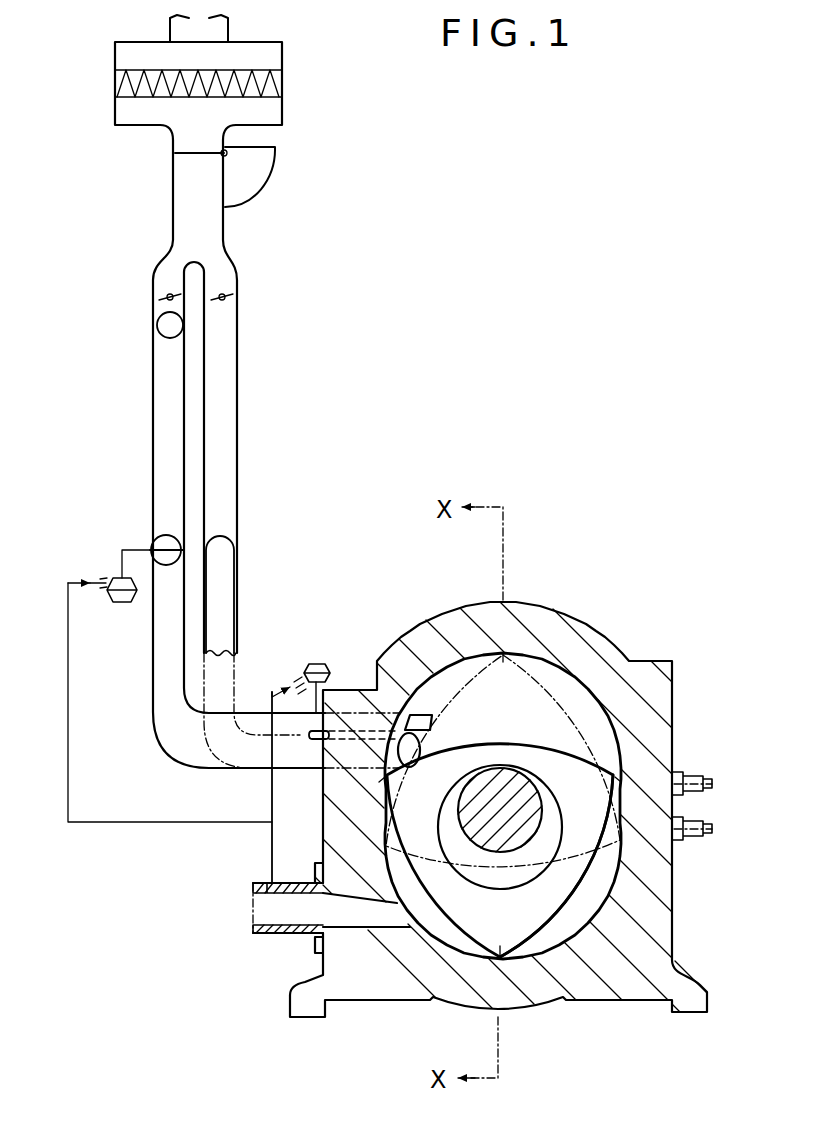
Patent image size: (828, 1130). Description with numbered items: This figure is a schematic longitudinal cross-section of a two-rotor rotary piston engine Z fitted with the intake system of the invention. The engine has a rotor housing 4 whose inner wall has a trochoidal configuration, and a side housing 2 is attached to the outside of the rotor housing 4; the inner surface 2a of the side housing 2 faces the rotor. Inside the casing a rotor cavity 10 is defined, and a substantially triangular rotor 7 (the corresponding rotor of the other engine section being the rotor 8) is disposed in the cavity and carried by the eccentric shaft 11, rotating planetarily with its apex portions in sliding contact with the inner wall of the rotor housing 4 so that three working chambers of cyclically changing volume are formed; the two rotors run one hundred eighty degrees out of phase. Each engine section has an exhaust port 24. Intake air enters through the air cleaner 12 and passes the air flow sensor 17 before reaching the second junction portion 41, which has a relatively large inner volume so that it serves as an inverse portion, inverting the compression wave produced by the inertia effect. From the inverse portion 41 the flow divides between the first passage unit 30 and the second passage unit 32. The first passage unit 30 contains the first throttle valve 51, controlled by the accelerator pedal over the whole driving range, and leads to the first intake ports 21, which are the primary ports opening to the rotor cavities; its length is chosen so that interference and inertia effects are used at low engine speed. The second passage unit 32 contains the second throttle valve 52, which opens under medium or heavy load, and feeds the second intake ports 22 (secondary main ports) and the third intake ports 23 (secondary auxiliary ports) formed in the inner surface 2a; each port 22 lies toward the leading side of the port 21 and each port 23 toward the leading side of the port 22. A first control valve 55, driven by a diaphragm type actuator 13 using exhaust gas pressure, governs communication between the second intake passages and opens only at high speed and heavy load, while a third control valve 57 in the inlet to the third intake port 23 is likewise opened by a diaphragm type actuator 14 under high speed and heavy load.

The air cleaner 12 is at (270, 107).
The air flow sensor 17 is at (276, 160).
The second junction portion 41 is at (198, 232).
The second passage unit 32 is at (150, 368).
The first passage unit 30 is at (242, 368).
The second throttle valve 52 is at (165, 296).
The first throttle valve 51 is at (227, 296).
The first control valve 55 is at (155, 547).
The diaphragm type actuator 13 is at (117, 604).
The diaphragm type actuators 14 is at (317, 663).
The third control valve 57 is at (310, 733).
The second intake ports 22 is at (384, 690).
The third intake ports 23 is at (420, 720).
The first intake ports 21 is at (435, 733).
The rotor cavity 10 is at (600, 727).
The rotary piston engine Z is at (593, 620).
The side housing 2 is at (608, 872).
The inner surface of side housing 2a is at (565, 923).
The rotor housing 4 is at (643, 903).
The rotor 7 is at (522, 878).
The eccentric shaft 11 is at (536, 786).
The exhaust port 24 is at (373, 915).
The rotor 8 is at (482, 927).